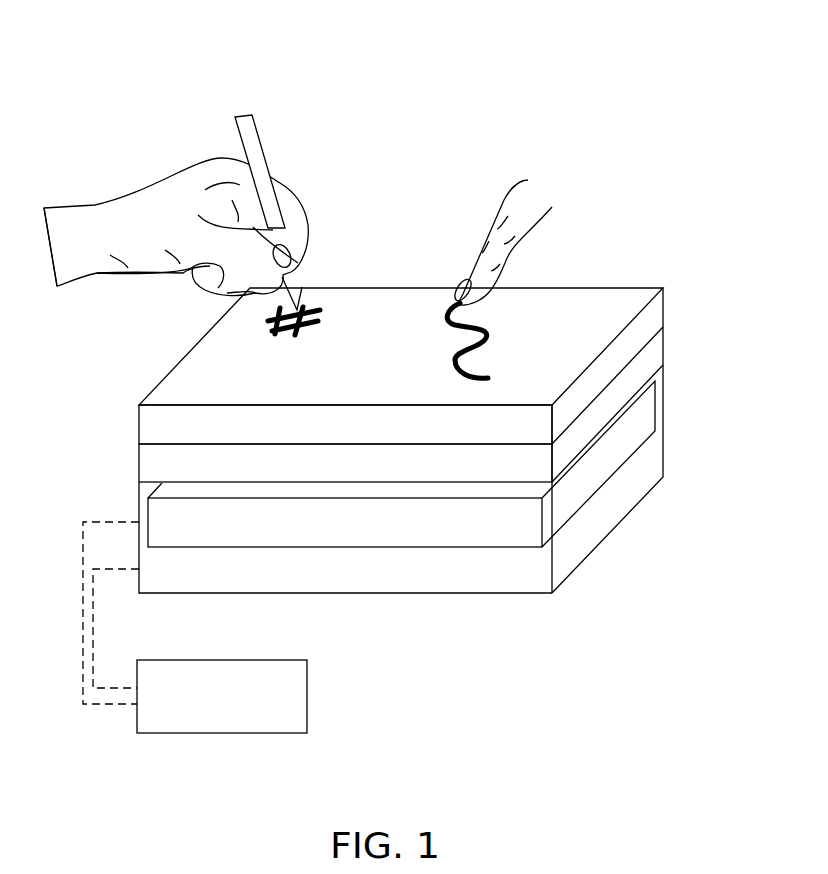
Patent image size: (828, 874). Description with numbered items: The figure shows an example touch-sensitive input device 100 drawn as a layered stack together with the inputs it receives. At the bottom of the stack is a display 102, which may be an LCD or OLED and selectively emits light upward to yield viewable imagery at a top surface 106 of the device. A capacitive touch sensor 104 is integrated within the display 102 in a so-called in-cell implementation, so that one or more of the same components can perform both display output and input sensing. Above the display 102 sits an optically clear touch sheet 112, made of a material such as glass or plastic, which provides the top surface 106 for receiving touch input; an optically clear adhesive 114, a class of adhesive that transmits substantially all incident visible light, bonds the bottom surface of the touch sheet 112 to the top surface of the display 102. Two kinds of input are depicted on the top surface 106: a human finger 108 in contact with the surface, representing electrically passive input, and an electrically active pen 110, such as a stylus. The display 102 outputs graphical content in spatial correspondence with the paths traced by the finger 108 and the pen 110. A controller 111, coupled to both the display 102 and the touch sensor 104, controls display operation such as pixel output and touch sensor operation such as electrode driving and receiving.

The touch-sensitive input device 100 is at (411, 58).
The display 102 is at (408, 582).
The capacitive touch sensor 104 is at (447, 536).
The top surface 106 is at (626, 304).
The human finger 108 is at (510, 193).
The electrically active pen 110 is at (272, 130).
The controller 111 is at (239, 722).
The optically clear touch sheet 112 is at (438, 437).
The optically clear adhesive 114 is at (398, 474).